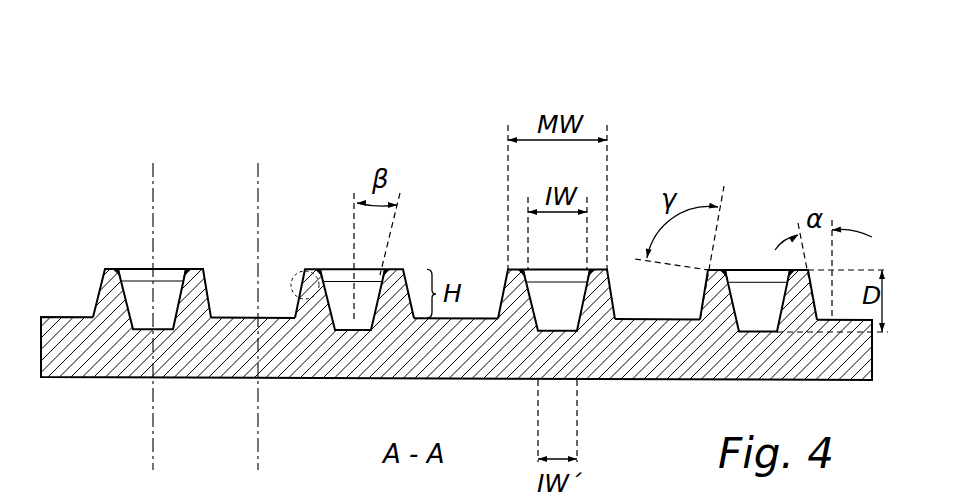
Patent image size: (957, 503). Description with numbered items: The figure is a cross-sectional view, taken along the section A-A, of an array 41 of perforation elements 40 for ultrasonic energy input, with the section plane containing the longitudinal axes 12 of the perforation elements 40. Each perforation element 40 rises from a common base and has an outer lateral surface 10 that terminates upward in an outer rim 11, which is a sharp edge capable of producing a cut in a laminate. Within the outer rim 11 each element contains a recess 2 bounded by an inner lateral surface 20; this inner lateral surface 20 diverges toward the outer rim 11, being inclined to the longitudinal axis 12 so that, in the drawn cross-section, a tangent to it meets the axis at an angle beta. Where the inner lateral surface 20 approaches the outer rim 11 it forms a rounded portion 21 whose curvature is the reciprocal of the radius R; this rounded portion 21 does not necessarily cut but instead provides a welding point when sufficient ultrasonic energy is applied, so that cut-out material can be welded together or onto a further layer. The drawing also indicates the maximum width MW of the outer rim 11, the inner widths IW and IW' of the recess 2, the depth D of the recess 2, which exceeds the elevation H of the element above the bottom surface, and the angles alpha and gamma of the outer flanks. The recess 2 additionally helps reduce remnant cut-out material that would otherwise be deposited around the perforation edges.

The outer lateral surface 10 is at (100, 283).
The outer rim 11 is at (105, 269).
The longitudinal axis 12 is at (207, 303).
The recess 2 is at (377, 148).
The inner lateral surface 20 is at (374, 312).
The rounded portion 21 is at (319, 268).
The radius of the rounded portion R is at (296, 279).
The perforation element 40 is at (617, 93).
The array 41 is at (178, 84).